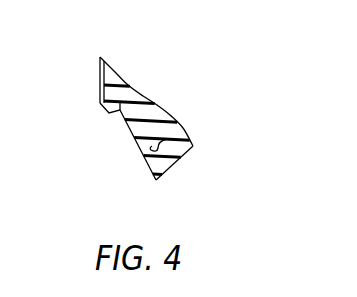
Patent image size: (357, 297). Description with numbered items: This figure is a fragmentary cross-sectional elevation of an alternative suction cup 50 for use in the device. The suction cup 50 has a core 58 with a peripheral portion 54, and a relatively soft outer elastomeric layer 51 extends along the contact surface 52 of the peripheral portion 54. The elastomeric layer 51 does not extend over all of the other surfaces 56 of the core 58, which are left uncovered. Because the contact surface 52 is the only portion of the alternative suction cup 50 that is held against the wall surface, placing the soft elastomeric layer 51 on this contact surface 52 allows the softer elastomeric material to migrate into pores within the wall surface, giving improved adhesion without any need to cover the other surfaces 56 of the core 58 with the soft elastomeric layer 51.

The alternative suction cup 50 is at (169, 109).
The outer elastomeric layer 51 is at (102, 107).
The contact surface 52 is at (99, 83).
The peripheral portion 54 is at (129, 85).
The other surfaces 56 is at (143, 157).
The core 58 is at (177, 158).